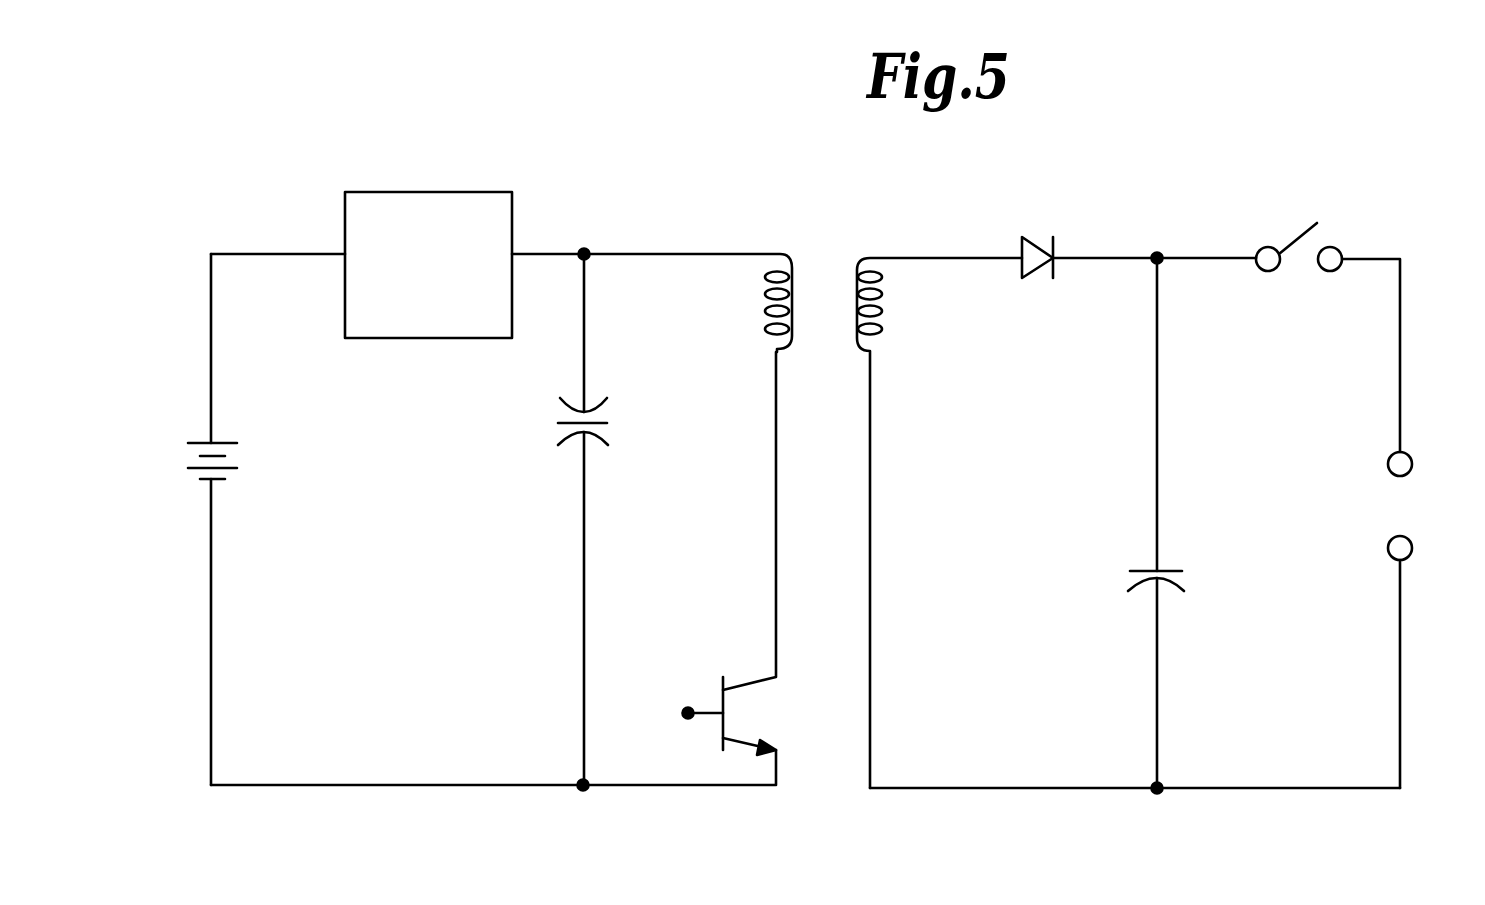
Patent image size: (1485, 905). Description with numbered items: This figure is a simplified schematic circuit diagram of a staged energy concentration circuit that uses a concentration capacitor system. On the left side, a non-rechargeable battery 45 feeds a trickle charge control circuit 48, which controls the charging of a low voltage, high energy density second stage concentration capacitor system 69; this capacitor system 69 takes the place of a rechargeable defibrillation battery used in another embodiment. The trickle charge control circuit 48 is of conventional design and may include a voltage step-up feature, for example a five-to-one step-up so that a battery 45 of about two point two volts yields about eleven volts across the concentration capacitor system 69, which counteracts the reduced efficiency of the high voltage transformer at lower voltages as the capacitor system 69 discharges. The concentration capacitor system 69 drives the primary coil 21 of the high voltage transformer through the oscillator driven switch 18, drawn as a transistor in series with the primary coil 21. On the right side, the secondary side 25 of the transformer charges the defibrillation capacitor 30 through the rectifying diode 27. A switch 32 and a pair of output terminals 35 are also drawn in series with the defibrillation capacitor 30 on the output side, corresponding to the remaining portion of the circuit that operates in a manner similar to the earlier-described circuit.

The trickle charge control circuit 48 is at (345, 199).
The second stage concentration capacitor system 69 is at (568, 437).
The non-rechargeable battery 45 is at (210, 479).
The primary coil 21 is at (765, 297).
The oscillator driven switch 18 is at (712, 712).
The secondary side 25 is at (882, 328).
The rectifying diode 27 is at (1033, 238).
The switch 32 is at (1290, 245).
The output terminals 35 is at (1406, 538).
The defibrillation capacitor 30 is at (1142, 570).